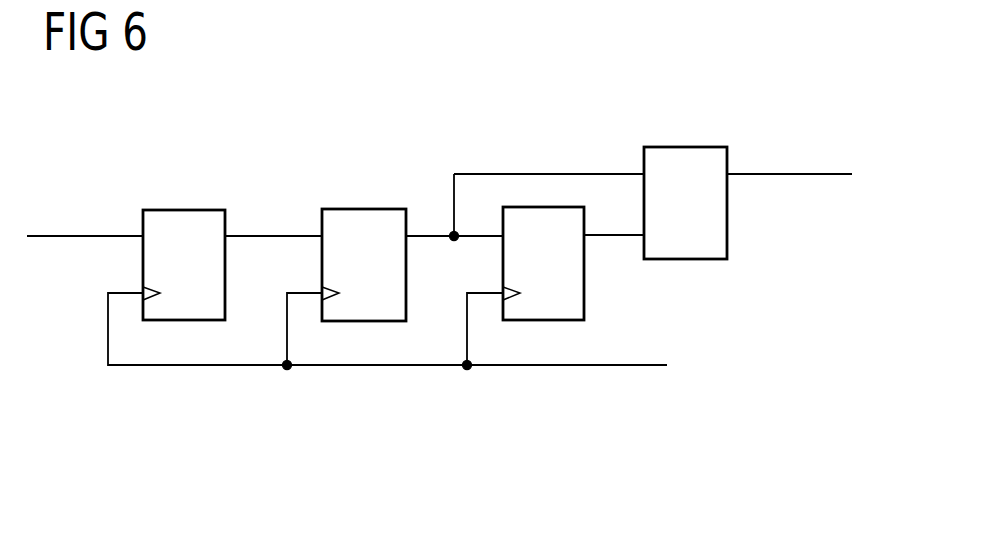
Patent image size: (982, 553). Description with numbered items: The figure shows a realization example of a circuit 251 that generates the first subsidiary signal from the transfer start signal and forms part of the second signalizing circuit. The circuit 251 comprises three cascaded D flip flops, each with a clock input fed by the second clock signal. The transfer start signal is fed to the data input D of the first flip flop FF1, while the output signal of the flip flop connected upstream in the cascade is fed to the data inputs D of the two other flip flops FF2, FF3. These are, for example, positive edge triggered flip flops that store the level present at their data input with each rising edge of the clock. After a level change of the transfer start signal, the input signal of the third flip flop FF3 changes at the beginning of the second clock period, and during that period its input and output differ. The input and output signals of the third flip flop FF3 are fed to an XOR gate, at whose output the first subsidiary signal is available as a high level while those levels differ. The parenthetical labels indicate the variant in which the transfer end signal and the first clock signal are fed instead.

The circuit 251 is at (752, 81).
The first flip flop FF1 is at (185, 210).
The second flip flop FF2 is at (363, 209).
The third flip flop FF3 is at (584, 264).
The XOR gate XOR is at (685, 203).